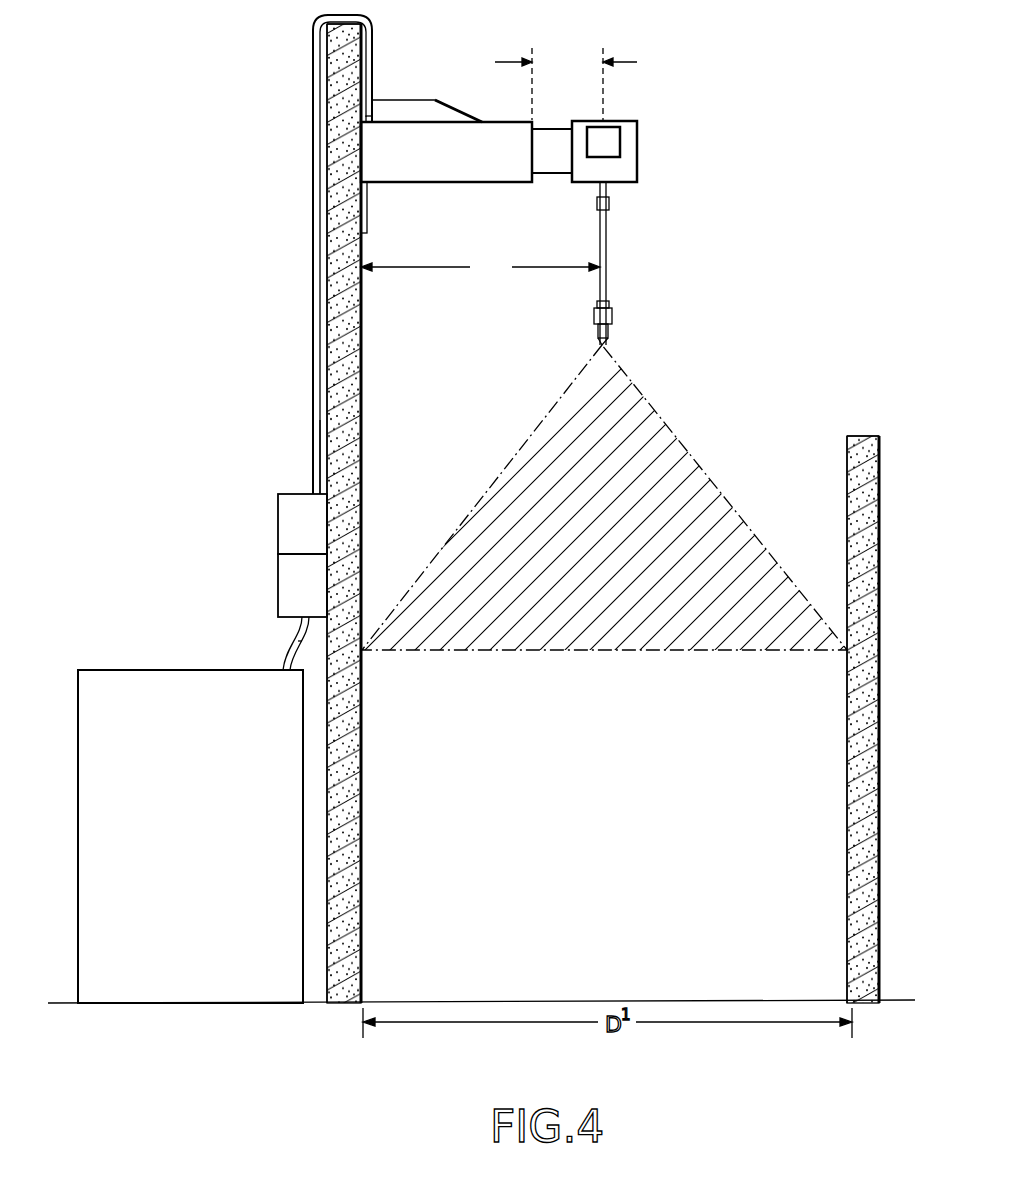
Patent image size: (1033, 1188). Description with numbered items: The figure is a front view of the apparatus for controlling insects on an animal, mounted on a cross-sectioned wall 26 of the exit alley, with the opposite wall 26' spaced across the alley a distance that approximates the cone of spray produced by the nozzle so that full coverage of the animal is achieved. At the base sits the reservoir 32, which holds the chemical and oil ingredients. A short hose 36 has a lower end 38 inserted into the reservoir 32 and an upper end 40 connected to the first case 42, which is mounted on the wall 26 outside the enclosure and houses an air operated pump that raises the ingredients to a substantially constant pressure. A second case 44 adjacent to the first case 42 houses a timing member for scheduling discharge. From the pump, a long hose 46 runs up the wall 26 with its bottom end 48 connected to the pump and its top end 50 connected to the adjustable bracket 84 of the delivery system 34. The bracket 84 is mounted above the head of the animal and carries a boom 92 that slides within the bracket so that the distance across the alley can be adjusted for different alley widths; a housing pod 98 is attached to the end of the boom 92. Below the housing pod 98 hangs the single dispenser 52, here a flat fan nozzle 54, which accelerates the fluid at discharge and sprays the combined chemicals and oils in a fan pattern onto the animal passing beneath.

The wall 26 is at (397, 513).
The opposite wall 26' is at (576, 742).
The reservoir 32 is at (78, 696).
The delivery system 34 is at (478, 78).
The short hose 36 is at (296, 642).
The lower end 38 is at (280, 670).
The upper end 40 is at (302, 618).
The first case 42 is at (278, 582).
The second case 44 is at (278, 518).
The long hose 46 is at (313, 376).
The bottom end 48 is at (313, 493).
The top end 50 is at (372, 116).
The dispenser 52 is at (612, 336).
The nozzle 54 is at (600, 344).
The bracket 84 is at (428, 183).
The boom 92 is at (557, 174).
The housing pod 98 is at (637, 150).